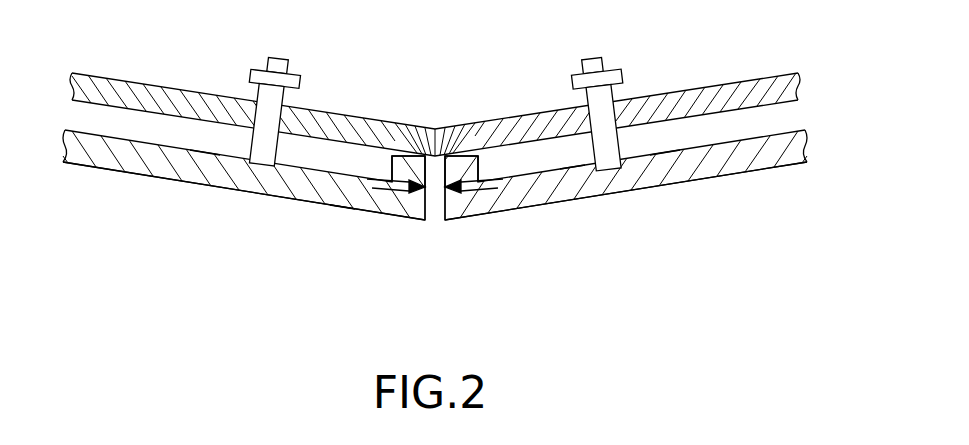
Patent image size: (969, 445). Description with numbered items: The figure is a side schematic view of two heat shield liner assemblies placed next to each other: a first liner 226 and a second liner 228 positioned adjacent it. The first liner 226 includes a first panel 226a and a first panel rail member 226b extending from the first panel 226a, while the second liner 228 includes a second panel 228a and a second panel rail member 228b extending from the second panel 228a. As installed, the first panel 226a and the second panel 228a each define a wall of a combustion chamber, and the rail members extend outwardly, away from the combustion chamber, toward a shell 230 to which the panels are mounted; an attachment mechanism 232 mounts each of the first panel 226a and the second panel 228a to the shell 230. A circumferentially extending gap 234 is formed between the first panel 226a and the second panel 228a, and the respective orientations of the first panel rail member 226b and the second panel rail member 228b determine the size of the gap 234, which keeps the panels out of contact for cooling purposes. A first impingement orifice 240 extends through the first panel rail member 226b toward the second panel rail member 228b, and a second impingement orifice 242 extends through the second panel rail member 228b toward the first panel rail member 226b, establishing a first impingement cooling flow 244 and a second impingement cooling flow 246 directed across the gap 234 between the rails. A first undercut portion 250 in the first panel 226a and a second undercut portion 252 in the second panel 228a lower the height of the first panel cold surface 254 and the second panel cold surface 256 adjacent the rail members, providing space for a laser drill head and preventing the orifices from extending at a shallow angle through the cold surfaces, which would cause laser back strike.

The first liner 226 is at (119, 222).
The first panel 226a is at (270, 194).
The first panel rail member 226b is at (410, 164).
The second liner 228 is at (778, 200).
The second panel 228a is at (621, 184).
The second panel rail member 228b is at (463, 164).
The shell 230 is at (177, 88).
The attachment mechanism 232 is at (280, 62).
The circumferentially extending gap 234 is at (435, 230).
The first impingement orifice 240 is at (392, 168).
The second impingement orifice 242 is at (477, 167).
The first impingement cooling flow 244 is at (380, 180).
The second impingement cooling flow 246 is at (499, 181).
The first undercut portion 250 is at (343, 200).
The second undercut portion 252 is at (572, 172).
The first panel cold surface 254 is at (204, 150).
The second panel cold surface 256 is at (660, 153).